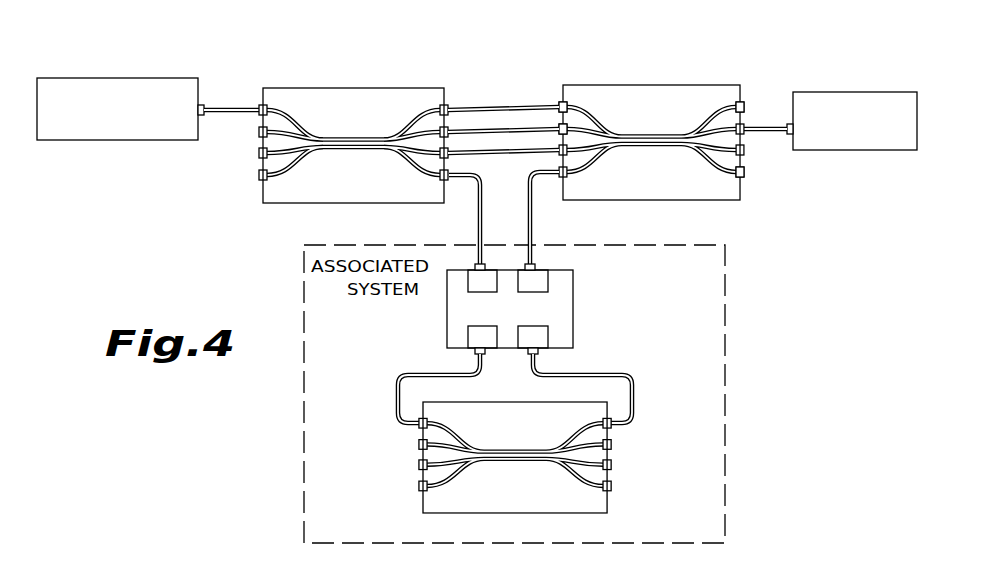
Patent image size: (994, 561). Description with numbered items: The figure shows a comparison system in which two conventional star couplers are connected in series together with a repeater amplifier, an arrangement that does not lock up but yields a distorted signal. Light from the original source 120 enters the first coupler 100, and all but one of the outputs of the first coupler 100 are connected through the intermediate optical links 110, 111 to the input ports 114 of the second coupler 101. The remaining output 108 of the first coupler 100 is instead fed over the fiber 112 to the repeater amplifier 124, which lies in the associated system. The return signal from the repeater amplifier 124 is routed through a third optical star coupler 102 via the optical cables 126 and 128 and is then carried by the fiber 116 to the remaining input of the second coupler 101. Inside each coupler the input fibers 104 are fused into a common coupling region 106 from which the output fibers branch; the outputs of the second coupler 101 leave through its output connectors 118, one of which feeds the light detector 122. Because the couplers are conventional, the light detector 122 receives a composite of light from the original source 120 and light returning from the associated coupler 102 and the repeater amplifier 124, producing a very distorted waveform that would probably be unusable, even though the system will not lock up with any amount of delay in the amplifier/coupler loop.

The first coupler 100 is at (353, 132).
The second coupler 101 is at (661, 83).
The optical star coupler 102 is at (418, 507).
The input optical fiber 104 is at (297, 192).
The fused coupling region 106 is at (362, 91).
The remaining output 108 is at (399, 170).
The optical fiber link 110 is at (452, 96).
The optical fiber link 111 is at (495, 127).
The optical fiber to repeater receiver 112 is at (477, 193).
The input connectors 114 is at (553, 126).
The remaining input 116 is at (534, 218).
The output connectors 118 is at (748, 127).
The original source 120 is at (120, 141).
The light detector 122 is at (868, 152).
The repeater amplifier 124 is at (573, 307).
The optical cable 126 is at (395, 401).
The optical cable 128 is at (636, 402).